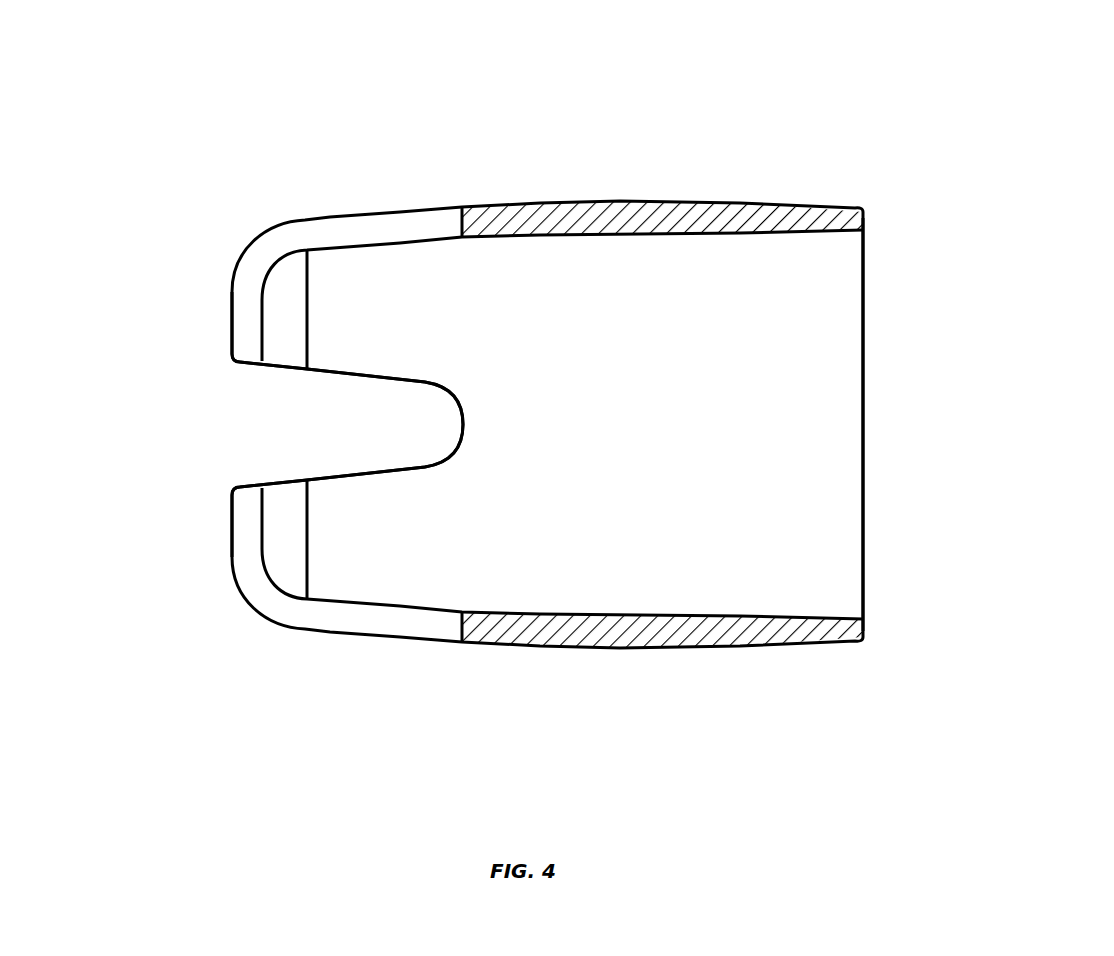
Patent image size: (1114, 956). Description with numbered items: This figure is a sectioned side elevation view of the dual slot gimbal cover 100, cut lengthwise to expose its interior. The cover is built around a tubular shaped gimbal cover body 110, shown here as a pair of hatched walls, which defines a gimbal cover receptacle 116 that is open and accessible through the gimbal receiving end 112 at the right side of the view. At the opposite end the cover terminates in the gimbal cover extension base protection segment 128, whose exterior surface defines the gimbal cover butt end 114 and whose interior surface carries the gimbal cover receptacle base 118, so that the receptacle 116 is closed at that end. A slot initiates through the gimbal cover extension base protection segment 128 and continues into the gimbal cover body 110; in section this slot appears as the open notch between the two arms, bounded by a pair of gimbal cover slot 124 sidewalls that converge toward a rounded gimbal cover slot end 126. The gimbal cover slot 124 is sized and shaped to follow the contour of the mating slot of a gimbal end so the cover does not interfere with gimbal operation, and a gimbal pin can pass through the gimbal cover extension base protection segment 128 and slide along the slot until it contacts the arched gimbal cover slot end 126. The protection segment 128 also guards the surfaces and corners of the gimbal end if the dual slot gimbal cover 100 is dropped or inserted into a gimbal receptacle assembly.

The dual slot gimbal cover 100 is at (996, 94).
The gimbal cover body 110 is at (665, 647).
The gimbal receiving end 112 is at (866, 480).
The gimbal cover butt end 114 is at (232, 313).
The gimbal cover receptacle 116 is at (810, 424).
The gimbal cover receptacle base 118 is at (263, 335).
The gimbal cover slot 124 is at (333, 232).
The gimbal cover slot end 126 is at (462, 225).
The gimbal cover extension base protection segment 128 is at (244, 320).